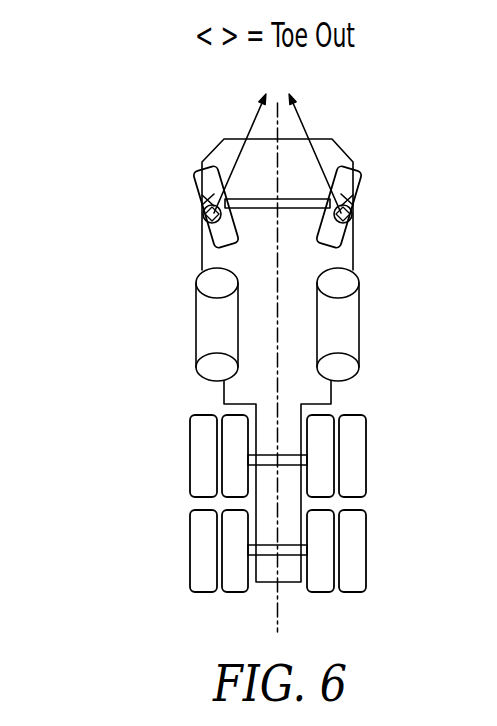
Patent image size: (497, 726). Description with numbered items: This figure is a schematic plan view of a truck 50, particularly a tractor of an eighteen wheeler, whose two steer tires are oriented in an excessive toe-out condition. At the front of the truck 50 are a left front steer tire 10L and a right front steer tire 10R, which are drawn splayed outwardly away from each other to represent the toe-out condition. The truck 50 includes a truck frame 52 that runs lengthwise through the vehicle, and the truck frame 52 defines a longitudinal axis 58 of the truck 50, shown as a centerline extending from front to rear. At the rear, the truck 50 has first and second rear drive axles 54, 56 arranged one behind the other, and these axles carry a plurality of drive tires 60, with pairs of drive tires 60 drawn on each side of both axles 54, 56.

The truck 50 is at (98, 133).
The left front steer tire 10L is at (195, 163).
The right front steer tire 10R is at (358, 163).
The truck frame 52 is at (293, 260).
The first rear drive axle 54 is at (288, 457).
The second rear drive axle 56 is at (287, 556).
The longitudinal axis 58 is at (277, 272).
The drive tires 60 is at (190, 457).